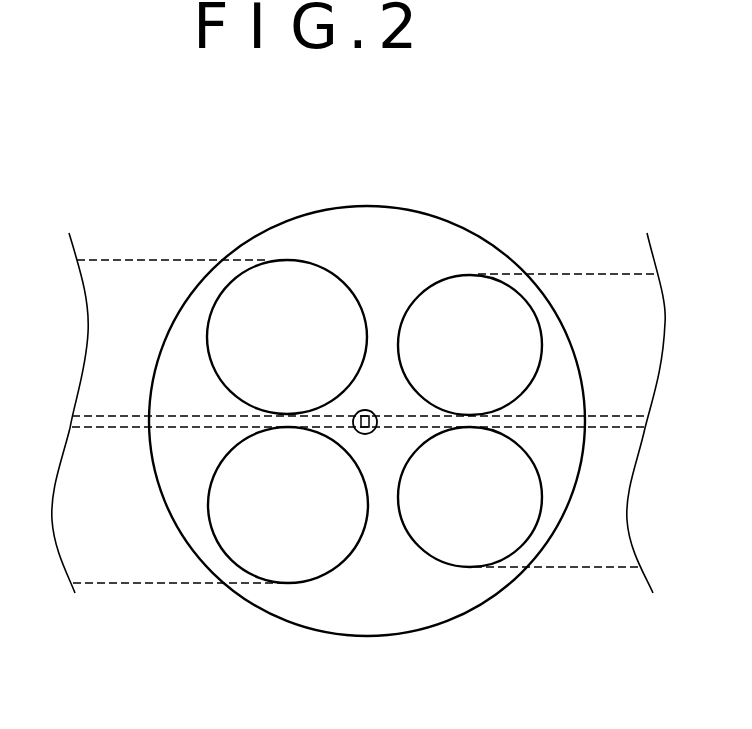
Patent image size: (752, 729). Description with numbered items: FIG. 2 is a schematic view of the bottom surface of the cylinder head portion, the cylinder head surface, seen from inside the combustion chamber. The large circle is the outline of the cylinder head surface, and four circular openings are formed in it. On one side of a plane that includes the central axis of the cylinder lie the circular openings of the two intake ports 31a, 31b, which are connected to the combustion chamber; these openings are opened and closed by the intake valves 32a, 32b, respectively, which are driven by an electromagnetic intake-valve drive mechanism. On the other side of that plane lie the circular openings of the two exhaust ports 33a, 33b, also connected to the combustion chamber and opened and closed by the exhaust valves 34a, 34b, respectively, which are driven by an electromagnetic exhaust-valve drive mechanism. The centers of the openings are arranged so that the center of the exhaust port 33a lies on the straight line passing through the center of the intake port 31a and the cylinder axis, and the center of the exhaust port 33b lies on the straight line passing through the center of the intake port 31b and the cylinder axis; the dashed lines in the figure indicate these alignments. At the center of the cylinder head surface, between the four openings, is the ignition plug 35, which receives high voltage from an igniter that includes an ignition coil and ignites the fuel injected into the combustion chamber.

The intake port 31a is at (133, 258).
The intake port 31b is at (144, 576).
The intake valve 32a is at (295, 293).
The intake valve 32b is at (295, 560).
The exhaust port 33a is at (602, 566).
The exhaust port 33b is at (596, 277).
The exhaust valve 34a is at (467, 550).
The exhaust valve 34b is at (448, 293).
The ignition plug 35 is at (372, 434).